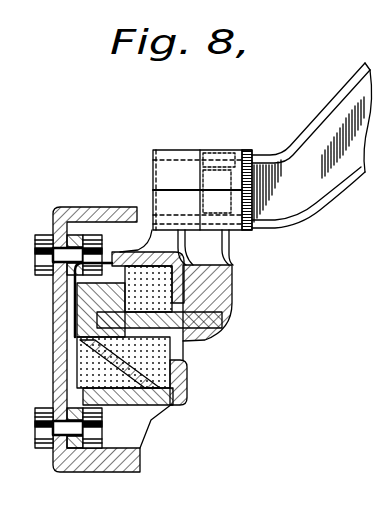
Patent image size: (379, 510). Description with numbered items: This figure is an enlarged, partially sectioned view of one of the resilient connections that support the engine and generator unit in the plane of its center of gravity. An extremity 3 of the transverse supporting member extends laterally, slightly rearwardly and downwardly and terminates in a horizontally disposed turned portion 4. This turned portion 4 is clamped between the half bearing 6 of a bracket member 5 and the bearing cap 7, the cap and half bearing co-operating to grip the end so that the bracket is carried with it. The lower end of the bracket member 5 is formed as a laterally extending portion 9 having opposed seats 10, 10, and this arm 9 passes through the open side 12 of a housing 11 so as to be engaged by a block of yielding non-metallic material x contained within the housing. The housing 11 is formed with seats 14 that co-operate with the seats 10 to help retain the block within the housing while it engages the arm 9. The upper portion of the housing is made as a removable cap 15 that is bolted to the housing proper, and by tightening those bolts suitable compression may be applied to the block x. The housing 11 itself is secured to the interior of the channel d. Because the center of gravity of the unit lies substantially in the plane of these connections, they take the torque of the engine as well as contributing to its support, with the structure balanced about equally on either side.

The extremity of transverse supporting member 3 is at (332, 122).
The horizontally disposed turned portion 4 is at (152, 162).
The bracket member 5 is at (229, 290).
The half bearing 6 is at (173, 233).
The bearing cap 7 is at (175, 153).
The laterally extending portion 9 is at (212, 340).
The seats 10 is at (233, 318).
The housing 11 is at (148, 413).
The open side 12 is at (177, 362).
The housing seats 14 is at (173, 423).
The removable cap 15 is at (172, 250).
The channel d is at (53, 308).
The block of yielding non-metallic material x is at (53, 363).